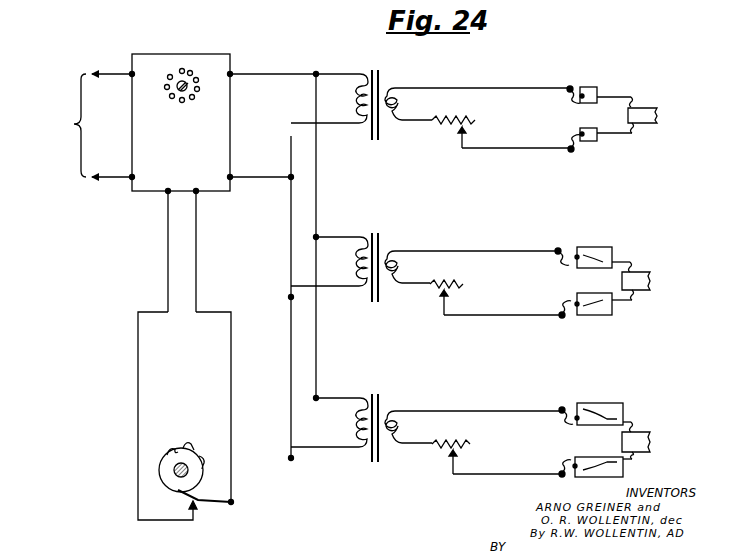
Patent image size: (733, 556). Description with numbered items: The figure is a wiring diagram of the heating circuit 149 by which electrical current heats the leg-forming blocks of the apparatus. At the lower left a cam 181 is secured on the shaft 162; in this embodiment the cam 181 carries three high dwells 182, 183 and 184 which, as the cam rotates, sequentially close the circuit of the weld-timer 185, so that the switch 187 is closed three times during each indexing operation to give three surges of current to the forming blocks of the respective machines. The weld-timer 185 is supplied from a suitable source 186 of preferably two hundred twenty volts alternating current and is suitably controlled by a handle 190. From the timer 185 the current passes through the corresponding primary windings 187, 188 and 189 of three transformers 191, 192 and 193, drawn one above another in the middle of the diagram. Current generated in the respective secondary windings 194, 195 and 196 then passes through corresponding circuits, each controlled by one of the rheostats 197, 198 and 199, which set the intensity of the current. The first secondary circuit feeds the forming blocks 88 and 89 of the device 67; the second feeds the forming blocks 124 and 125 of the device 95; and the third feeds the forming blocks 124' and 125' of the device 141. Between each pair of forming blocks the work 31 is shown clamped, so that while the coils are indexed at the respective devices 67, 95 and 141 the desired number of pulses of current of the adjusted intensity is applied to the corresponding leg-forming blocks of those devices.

The control circuit 149 is at (132, 6).
The weld-timer 185 is at (153, 193).
The handle 190 is at (188, 76).
The source 186 is at (79, 154).
The cam 181 is at (160, 472).
The high dwell 182 is at (172, 448).
The high dwell 183 is at (191, 446).
The high dwell 184 is at (205, 462).
The shaft 162 is at (188, 470).
The switch 187 is at (202, 509).
The transformer 191 is at (395, 98).
The transformer 192 is at (378, 228).
The transformer 193 is at (378, 390).
The primary winding 188 is at (343, 253).
The primary winding 189 is at (344, 414).
The secondary winding 194 is at (398, 101).
The secondary winding 195 is at (392, 262).
The secondary winding 196 is at (392, 422).
The rheostat 197 is at (463, 106).
The rheostat 198 is at (450, 282).
The rheostat 199 is at (445, 442).
The forming block 88 is at (576, 86).
The forming block 89 is at (590, 142).
The device 67 is at (602, 92).
The workpiece 31 is at (634, 100).
The device 95 is at (570, 244).
The forming block 125 is at (603, 240).
The forming block 124 is at (595, 321).
The device 141 is at (570, 402).
The forming block 125' is at (608, 399).
The forming block 124' is at (595, 480).